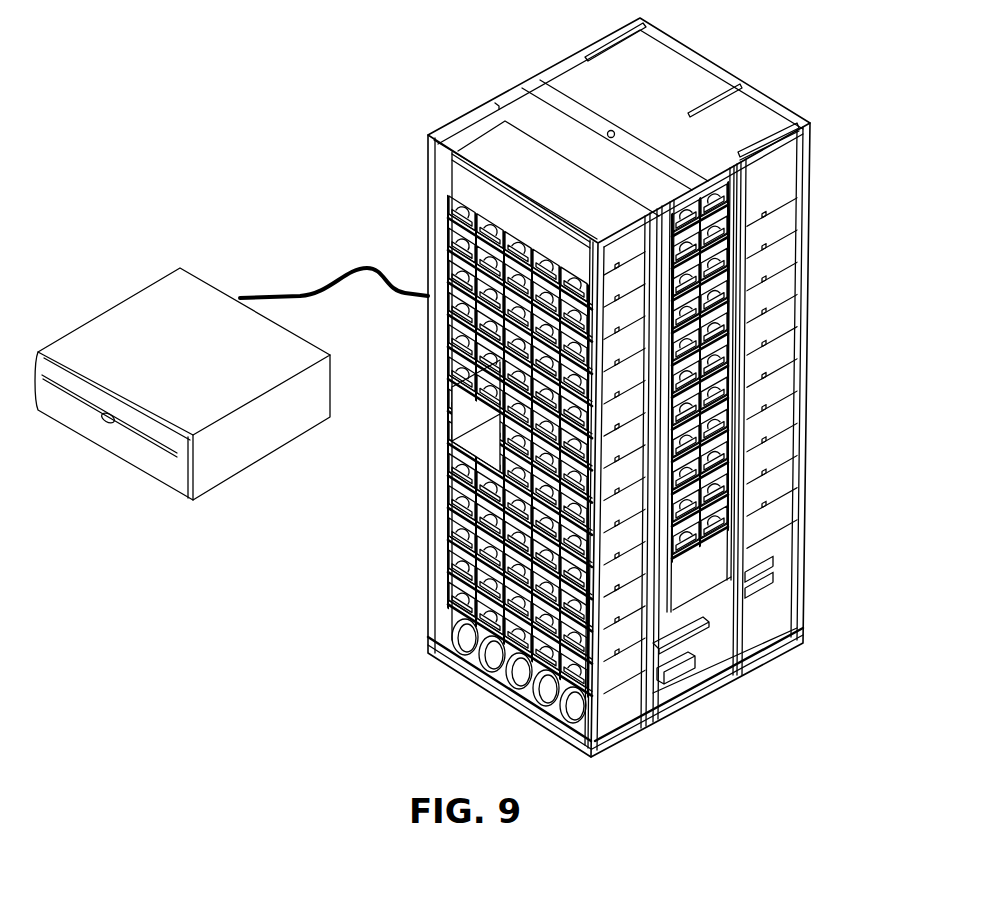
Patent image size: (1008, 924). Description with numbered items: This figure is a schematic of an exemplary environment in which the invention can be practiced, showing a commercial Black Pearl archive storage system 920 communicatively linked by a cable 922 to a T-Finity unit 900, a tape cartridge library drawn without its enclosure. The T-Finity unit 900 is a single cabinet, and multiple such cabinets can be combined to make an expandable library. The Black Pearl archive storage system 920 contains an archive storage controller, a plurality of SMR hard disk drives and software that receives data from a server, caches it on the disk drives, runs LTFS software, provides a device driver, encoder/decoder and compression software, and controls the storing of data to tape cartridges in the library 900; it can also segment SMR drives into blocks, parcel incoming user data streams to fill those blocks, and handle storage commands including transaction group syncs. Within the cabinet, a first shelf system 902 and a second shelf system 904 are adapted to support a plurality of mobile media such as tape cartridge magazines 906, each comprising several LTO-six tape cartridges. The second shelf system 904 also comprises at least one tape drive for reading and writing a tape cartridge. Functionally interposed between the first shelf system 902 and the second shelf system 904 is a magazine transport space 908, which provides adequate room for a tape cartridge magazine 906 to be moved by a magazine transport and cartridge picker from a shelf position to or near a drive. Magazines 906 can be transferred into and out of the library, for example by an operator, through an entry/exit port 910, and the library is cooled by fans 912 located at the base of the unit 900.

The T-Finity unit 900 is at (458, 82).
The first shelf system 902 is at (408, 496).
The second shelf system 904 is at (828, 404).
The tape cartridge magazine 906 is at (445, 250).
The magazine transport space 908 is at (713, 652).
The entry/exit port 910 is at (466, 414).
The fans 912 is at (454, 674).
The Black Pearl archive storage system 920 is at (163, 273).
The cable 922 is at (327, 288).